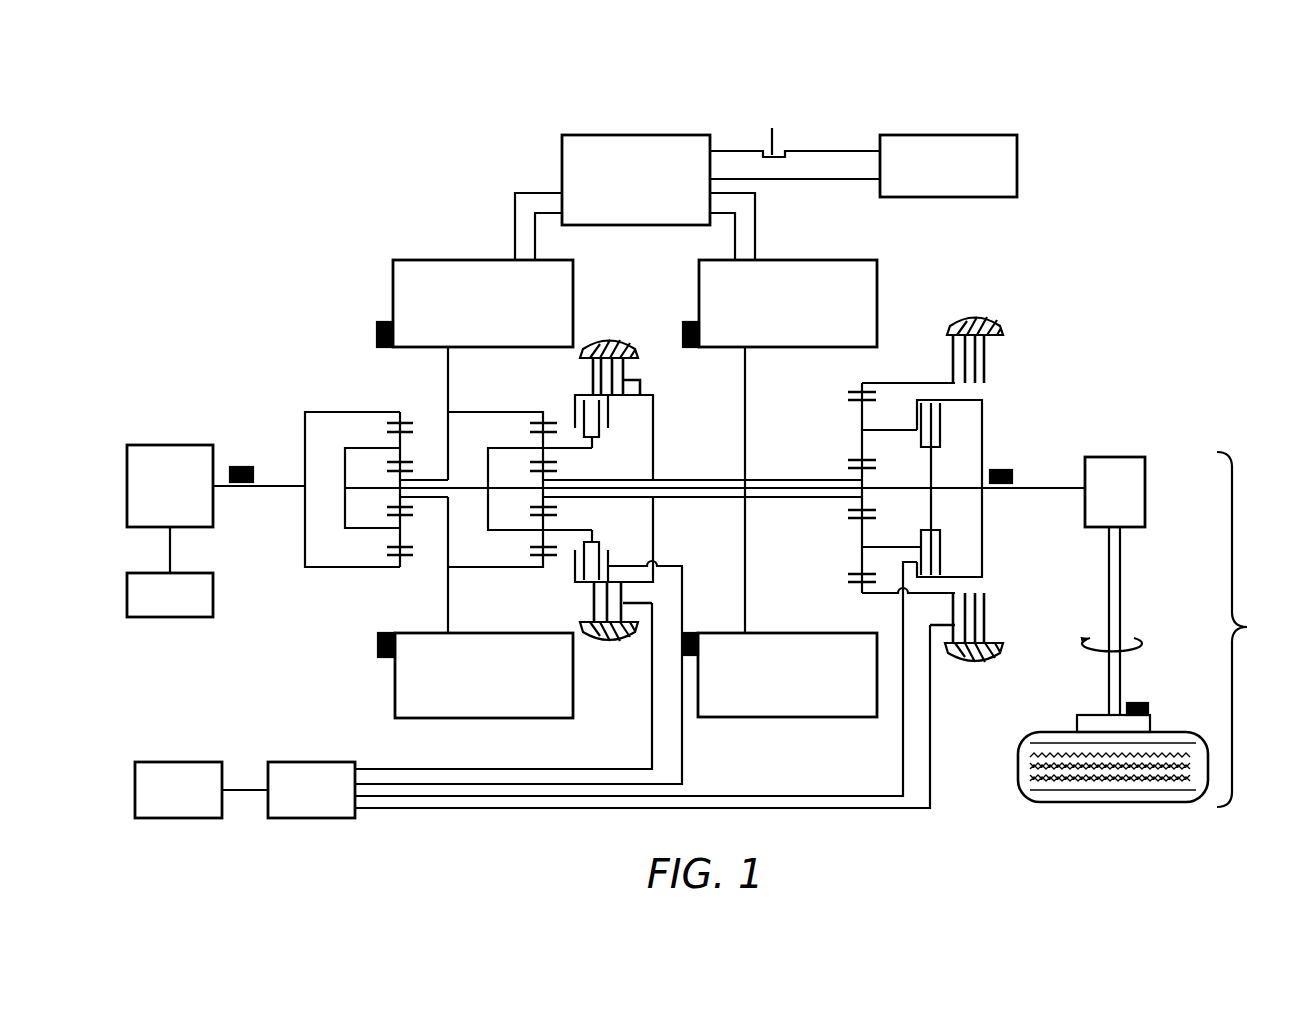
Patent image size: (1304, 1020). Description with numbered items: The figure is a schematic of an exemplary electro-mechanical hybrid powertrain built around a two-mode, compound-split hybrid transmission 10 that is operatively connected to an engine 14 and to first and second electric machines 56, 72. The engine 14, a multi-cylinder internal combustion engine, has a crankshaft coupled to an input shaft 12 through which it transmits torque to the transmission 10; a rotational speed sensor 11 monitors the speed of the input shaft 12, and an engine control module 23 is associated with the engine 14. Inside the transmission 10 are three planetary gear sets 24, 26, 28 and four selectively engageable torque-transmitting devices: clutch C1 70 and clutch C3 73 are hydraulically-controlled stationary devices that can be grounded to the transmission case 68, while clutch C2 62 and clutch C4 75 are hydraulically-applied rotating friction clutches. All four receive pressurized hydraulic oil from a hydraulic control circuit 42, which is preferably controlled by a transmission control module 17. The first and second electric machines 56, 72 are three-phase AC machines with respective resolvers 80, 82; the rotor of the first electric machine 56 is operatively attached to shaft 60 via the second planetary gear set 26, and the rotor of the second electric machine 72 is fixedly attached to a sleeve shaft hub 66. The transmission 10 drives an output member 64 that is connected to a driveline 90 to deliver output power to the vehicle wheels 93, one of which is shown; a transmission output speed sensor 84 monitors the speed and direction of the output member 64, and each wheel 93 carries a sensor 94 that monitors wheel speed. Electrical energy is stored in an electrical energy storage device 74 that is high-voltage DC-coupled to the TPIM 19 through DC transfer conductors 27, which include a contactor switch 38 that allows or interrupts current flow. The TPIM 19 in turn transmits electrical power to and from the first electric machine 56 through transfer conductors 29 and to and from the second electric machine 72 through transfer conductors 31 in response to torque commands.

The hybrid transmission 10 is at (354, 220).
The rotational speed sensor 11 is at (241, 465).
The input shaft 12 is at (284, 482).
The engine 14 is at (170, 509).
The transmission control module 17 is at (201, 790).
The TPIM 19 is at (636, 180).
The engine control module 23 is at (170, 595).
The first planetary gear set 24 is at (391, 402).
The second planetary gear set 26 is at (537, 402).
The DC transfer conductors 27 is at (735, 150).
The third planetary gear set 28 is at (855, 379).
The transfer conductors 29 is at (514, 222).
The transfer conductors 31 is at (758, 222).
The contactor switch 38 is at (766, 150).
The hydraulic control circuit 42 is at (599, 689).
The first electric machine 56 is at (483, 489).
The shaft 60 is at (908, 486).
The clutch C2 62 is at (960, 428).
The output member 64 is at (1060, 487).
The sleeve shaft hub 66 is at (768, 478).
The transmission case 68 is at (608, 338).
The clutch C1 70 is at (949, 352).
The second electric machine 72 is at (787, 488).
The clutch C3 73 is at (632, 379).
The electrical energy storage device 74 is at (948, 166).
The clutch C4 75 is at (612, 423).
The resolver 80 is at (376, 335).
The resolver 82 is at (691, 322).
The transmission output speed sensor 84 is at (1003, 468).
The driveline 90 is at (1141, 629).
The vehicle wheel 93 is at (1073, 722).
The wheel speed sensor 94 is at (1140, 703).